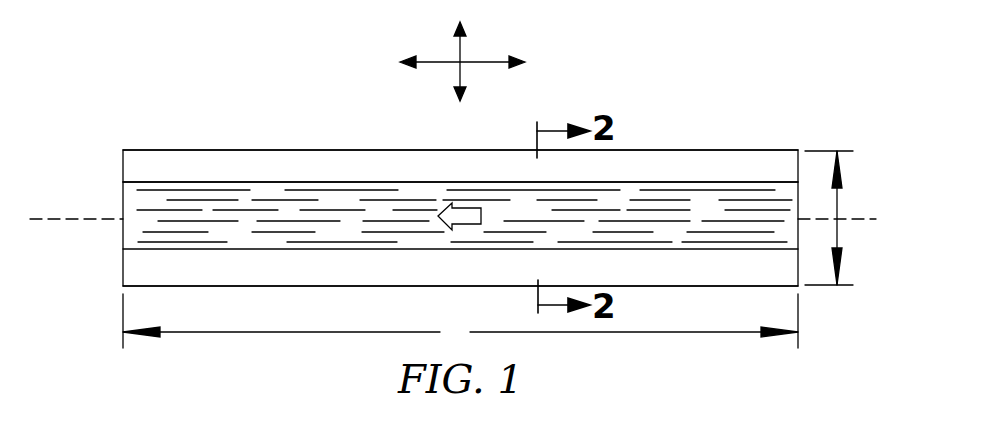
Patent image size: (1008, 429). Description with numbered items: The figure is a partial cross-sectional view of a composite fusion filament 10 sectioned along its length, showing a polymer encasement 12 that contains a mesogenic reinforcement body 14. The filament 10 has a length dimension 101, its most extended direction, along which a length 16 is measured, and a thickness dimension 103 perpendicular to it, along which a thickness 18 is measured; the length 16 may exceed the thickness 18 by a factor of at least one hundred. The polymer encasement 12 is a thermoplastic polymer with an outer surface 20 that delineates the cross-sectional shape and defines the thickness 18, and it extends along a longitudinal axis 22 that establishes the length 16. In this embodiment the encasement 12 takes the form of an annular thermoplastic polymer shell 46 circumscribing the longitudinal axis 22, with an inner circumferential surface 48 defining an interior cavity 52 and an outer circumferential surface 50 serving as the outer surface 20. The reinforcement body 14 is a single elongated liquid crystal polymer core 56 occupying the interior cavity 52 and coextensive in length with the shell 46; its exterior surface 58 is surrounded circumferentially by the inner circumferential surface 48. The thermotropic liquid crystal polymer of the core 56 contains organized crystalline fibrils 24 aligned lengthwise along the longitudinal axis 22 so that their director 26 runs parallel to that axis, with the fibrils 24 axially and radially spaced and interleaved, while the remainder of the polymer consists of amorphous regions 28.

The composite fusion filament 10 is at (117, 114).
The polymer encasement 12 is at (202, 160).
The mesogenic reinforcement body 14 is at (261, 188).
The length 16 is at (460, 321).
The thickness 18 is at (840, 205).
The outer surface 20 is at (618, 150).
The longitudinal axis 22 is at (48, 212).
The organized crystalline fibrils 24 is at (353, 210).
The director 26 is at (462, 210).
The amorphous regions 28 is at (437, 200).
The annular thermoplastic polymer shell 46 is at (295, 167).
The inner circumferential surface 48 is at (556, 250).
The outer circumferential surface 50 is at (656, 291).
The interior cavity 52 is at (592, 183).
The elongated liquid crystal polymer core 56 is at (272, 240).
The exterior surface 58 is at (430, 250).
The length dimension 101 is at (486, 60).
The thickness dimension 103 is at (465, 74).